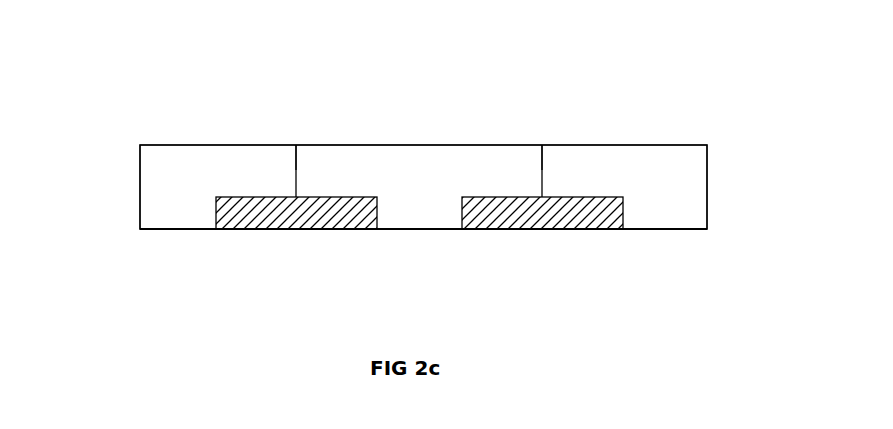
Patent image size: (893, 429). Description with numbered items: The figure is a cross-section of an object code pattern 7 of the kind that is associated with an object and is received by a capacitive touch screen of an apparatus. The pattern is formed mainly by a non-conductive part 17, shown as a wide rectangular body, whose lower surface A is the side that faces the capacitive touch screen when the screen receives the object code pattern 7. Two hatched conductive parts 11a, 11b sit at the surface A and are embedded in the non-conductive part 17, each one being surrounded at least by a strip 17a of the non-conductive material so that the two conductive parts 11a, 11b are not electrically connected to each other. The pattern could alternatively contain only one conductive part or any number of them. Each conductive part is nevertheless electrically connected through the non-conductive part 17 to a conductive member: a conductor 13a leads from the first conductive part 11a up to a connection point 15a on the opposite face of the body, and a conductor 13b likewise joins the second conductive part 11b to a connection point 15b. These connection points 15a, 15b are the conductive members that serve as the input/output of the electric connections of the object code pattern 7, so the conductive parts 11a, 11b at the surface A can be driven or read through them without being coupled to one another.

The object code pattern 7 is at (150, 66).
The non-conductive part 17 is at (157, 185).
The strip of non-conductive part 17a is at (420, 210).
The surface A is at (177, 229).
The conductive part 11a is at (270, 229).
The conductive part 11b is at (572, 229).
The conductor 13a is at (297, 168).
The conductor 13b is at (543, 168).
The connection point 15a is at (296, 145).
The connection point 15b is at (542, 145).